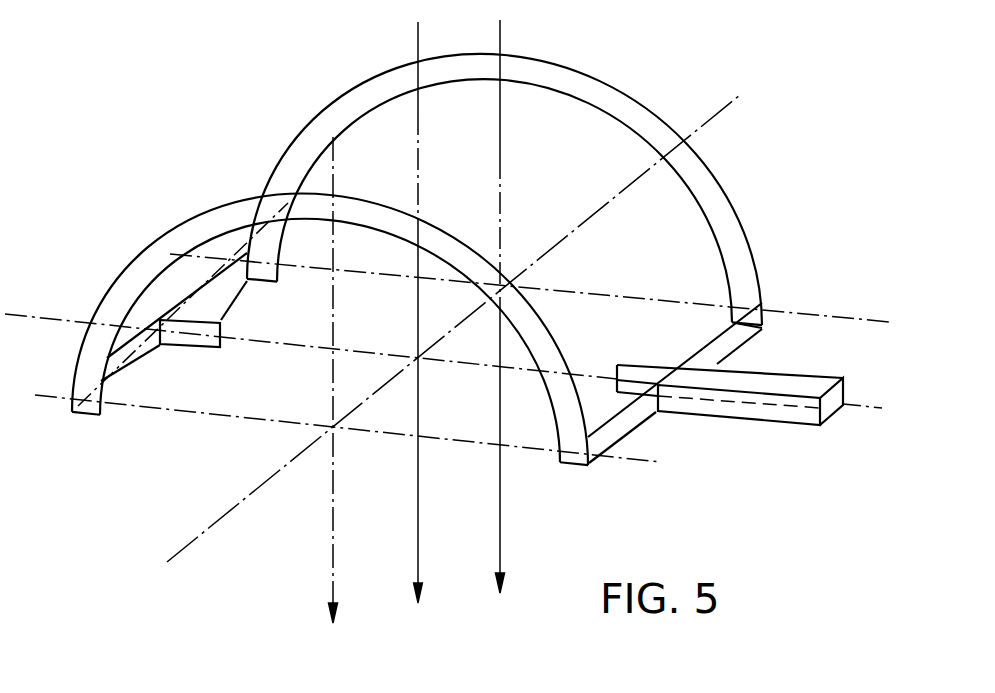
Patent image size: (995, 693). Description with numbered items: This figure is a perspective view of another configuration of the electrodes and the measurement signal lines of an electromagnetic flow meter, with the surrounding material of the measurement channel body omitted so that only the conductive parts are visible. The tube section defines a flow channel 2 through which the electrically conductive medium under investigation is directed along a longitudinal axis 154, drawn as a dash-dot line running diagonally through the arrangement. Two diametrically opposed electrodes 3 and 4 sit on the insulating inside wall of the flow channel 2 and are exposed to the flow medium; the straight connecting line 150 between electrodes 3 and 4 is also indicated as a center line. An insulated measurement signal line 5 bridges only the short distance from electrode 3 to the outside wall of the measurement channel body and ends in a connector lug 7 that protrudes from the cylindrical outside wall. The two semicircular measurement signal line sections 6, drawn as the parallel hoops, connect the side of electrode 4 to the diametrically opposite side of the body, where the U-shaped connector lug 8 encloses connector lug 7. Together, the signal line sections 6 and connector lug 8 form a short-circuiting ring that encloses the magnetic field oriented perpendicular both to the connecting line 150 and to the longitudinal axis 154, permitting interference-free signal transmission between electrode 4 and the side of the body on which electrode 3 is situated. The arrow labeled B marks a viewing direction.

The measurement signal line 6 is at (583, 86).
The connecting line 150 is at (256, 338).
The electrode 4 is at (221, 345).
The electrode 3 is at (615, 367).
The measurement signal line 5 is at (732, 384).
The connector lug 7 is at (800, 387).
The connector lug 8 is at (788, 413).
The longitudinal axis 154 is at (183, 546).
The flow channel 2 is at (268, 538).
The viewing direction B is at (420, 331).